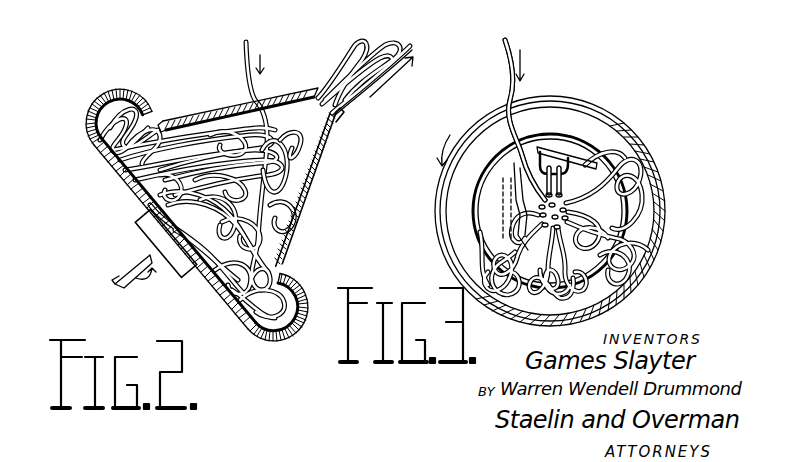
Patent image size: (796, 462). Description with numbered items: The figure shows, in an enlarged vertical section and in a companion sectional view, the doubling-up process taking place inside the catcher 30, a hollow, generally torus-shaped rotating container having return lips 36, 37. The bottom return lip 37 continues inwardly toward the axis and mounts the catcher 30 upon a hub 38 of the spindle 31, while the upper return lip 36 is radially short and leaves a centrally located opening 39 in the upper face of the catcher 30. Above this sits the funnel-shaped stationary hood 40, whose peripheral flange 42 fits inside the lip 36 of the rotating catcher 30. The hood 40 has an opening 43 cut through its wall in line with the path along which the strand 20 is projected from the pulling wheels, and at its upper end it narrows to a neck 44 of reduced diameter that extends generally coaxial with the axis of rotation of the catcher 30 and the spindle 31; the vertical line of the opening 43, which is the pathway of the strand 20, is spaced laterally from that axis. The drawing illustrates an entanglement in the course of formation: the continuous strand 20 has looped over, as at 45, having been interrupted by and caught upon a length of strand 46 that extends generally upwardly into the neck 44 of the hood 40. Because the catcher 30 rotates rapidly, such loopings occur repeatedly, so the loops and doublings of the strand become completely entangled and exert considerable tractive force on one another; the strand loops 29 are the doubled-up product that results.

In FIG. 3, the strand 20 is at (500, 88).
In FIG. 2, the fibrous product 29 is at (359, 37).
In FIG. 2, the catcher 30 is at (120, 195).
In FIG. 2, the spindle 31 is at (123, 262).
In FIG. 2, the return lip 36 is at (182, 86).
In FIG. 2, the bottom return lip 37 is at (112, 161).
In FIG. 2, the hub 38 is at (181, 275).
In FIG. 2, the opening 39 is at (286, 273).
In FIG. 2, the stationary hood 40 is at (286, 243).
In FIG. 3, the stationary hood 40 is at (615, 134).
In FIG. 2, the peripheral flange 42 is at (172, 123).
In FIG. 3, the opening 43 is at (572, 148).
In FIG. 2, the neck 44 is at (334, 113).
In FIG. 2, the loop 45 is at (281, 174).
In FIG. 3, the loop 45 is at (500, 178).
In FIG. 2, the length of strand 46 is at (292, 148).
In FIG. 3, the length of strand 46 is at (538, 208).